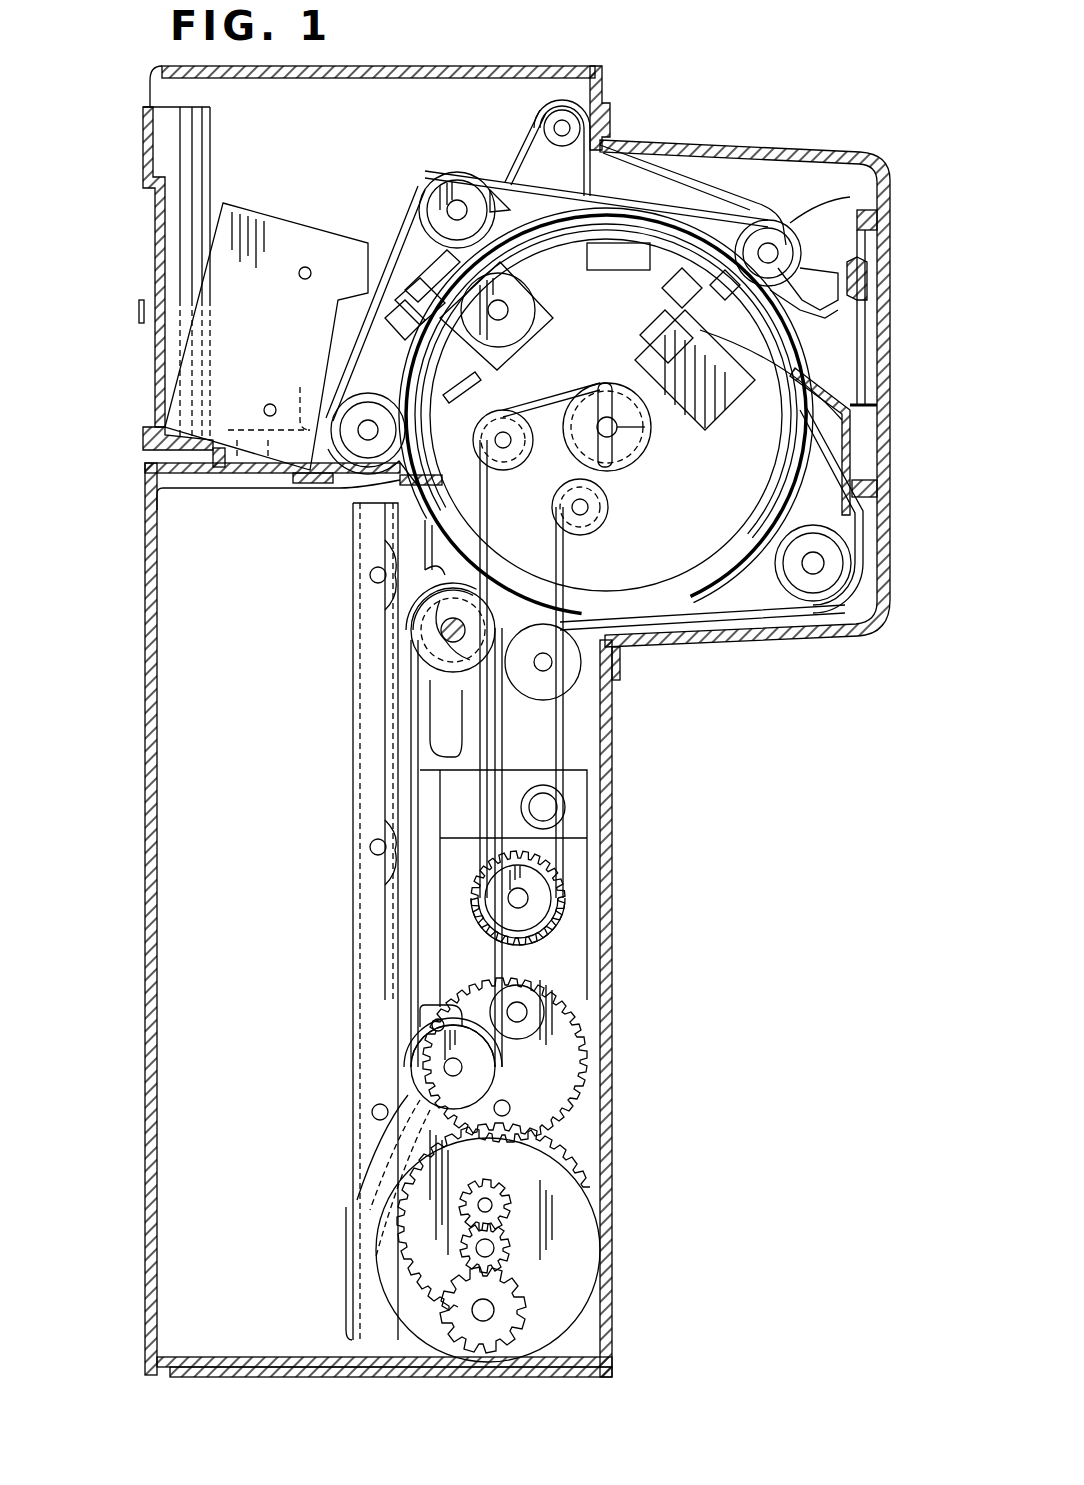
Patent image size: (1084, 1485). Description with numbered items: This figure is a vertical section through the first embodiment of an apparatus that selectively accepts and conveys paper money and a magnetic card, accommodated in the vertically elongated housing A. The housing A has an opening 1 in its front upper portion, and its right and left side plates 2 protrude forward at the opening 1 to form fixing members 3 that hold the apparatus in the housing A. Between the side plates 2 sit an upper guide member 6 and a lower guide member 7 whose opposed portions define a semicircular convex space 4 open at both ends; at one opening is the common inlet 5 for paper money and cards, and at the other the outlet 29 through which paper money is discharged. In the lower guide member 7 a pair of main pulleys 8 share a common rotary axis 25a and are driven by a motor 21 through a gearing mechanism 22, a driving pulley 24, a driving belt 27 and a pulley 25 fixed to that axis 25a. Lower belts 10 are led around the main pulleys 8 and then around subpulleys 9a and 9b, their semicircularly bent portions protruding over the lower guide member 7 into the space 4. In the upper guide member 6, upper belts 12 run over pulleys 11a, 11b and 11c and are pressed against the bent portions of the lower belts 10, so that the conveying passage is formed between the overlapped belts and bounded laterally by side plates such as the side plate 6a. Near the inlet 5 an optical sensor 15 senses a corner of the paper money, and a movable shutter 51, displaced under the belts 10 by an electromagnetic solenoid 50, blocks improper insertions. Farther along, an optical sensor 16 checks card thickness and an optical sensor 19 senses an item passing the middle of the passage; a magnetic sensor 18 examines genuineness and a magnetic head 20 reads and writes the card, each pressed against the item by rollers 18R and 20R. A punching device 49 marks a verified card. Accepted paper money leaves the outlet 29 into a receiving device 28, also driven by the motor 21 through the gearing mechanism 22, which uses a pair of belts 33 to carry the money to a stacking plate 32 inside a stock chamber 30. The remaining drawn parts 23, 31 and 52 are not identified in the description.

The opening 1 is at (620, 663).
The side plates 2 is at (577, 727).
The fixing members 3 is at (748, 190).
The semicircular convex space 4 is at (840, 322).
The common inlet 5 is at (820, 347).
The upper guide member 6 is at (768, 200).
The side plate 6a is at (385, 315).
The lower guide member 7 is at (882, 405).
The main pulleys 8 is at (728, 533).
The subpulleys 9a is at (808, 580).
The subpulleys 9b is at (460, 620).
The lower belts 10 is at (748, 615).
The pulleys 11a is at (783, 243).
The pulleys 11b is at (463, 193).
The pulleys 11c is at (340, 440).
The upper belts 12 is at (640, 235).
The sensor 15 is at (866, 265).
The optical sensor 16 is at (670, 267).
The magnetic sensor 18 is at (425, 262).
The roller 18R is at (557, 272).
The optical sensor 19 is at (467, 383).
The magnetic head 20 is at (545, 318).
The roller 20R is at (393, 287).
The motor 21 is at (570, 1267).
The gearing mechanism 22 is at (588, 1164).
The gear roller 23 is at (573, 902).
The driving pulley 24 is at (573, 940).
The pulley 25 is at (623, 443).
The common rotary axis 25a is at (618, 425).
The driving belt 27 is at (587, 753).
The device for receiving paper moneys 28 is at (148, 838).
The outlet 29 is at (352, 503).
The stock chamber 30 is at (290, 864).
The frame 31 is at (577, 810).
The stacking plate 32 is at (385, 685).
The belts 33 is at (412, 910).
The punching device 49 is at (267, 240).
The electromagnetic solenoid 50 is at (703, 413).
The shutter 51 is at (653, 313).
The side wall 52 is at (888, 535).
The housing A is at (632, 1047).